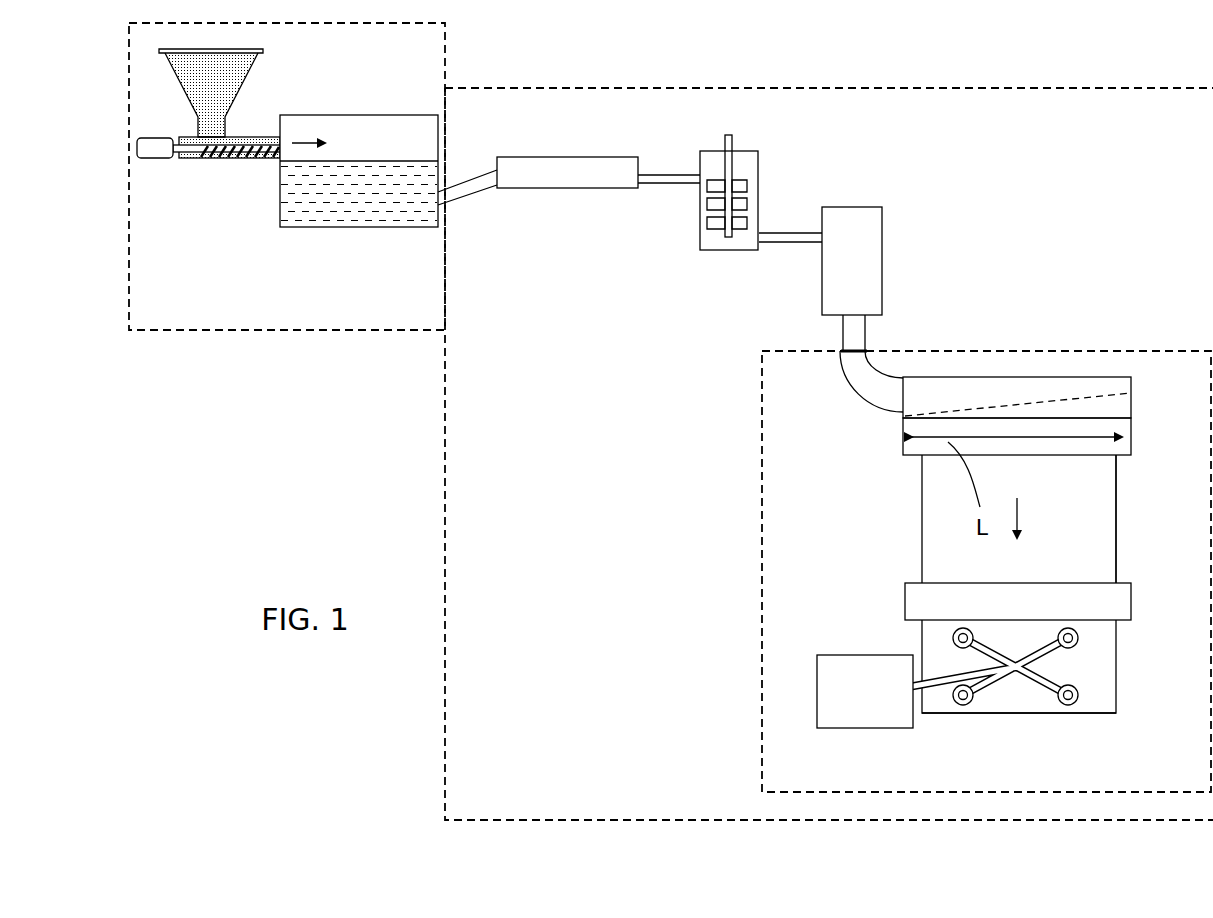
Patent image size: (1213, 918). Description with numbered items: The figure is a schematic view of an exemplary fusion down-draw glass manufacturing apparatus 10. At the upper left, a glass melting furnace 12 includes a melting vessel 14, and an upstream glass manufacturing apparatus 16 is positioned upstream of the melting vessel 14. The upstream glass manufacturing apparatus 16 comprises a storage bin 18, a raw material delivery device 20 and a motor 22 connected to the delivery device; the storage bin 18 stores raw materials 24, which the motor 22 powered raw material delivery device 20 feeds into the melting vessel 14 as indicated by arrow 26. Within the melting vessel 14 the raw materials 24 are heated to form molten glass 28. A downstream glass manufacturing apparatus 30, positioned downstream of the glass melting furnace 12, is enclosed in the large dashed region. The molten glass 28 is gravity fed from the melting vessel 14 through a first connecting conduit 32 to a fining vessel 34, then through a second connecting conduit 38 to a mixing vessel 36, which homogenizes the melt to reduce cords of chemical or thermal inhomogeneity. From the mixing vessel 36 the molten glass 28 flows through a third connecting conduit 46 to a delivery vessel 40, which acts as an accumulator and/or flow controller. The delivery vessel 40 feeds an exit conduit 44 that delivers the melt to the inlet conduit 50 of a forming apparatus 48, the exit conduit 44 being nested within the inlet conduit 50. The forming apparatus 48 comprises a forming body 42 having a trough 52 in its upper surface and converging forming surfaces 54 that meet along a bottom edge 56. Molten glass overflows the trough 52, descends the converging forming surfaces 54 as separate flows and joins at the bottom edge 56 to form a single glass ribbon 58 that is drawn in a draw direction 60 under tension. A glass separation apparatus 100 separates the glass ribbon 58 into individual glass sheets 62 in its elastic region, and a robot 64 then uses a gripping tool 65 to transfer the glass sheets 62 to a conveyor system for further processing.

The glass manufacturing apparatus 10 is at (363, 395).
The glass melting furnace 12 is at (291, 330).
The melting vessel 14 is at (325, 113).
The upstream glass manufacturing apparatus 16 is at (180, 187).
The storage bin 18 is at (253, 72).
The raw material delivery device 20 is at (247, 160).
The motor 22 is at (148, 137).
The raw materials 24 is at (220, 87).
The arrow 26 is at (305, 141).
The molten glass 28 is at (308, 217).
The downstream glass manufacturing apparatus 30 is at (705, 88).
The first connecting conduit 32 is at (455, 202).
The fining vessel 34 is at (552, 188).
The mixing vessel 36 is at (700, 230).
The second connecting conduit 38 is at (668, 183).
The delivery vessel 40 is at (820, 290).
The forming body 42 is at (1132, 413).
The exit conduit 44 is at (865, 332).
The third connecting conduit 46 is at (788, 248).
The forming apparatus 48 is at (1027, 351).
The inlet conduit 50 is at (860, 402).
The trough 52 is at (1070, 400).
The converging forming surfaces 54 is at (902, 448).
The bottom edge 56 is at (1097, 458).
The glass ribbon 58 is at (922, 508).
The draw direction 60 is at (1033, 514).
The glass sheets 62 is at (1117, 663).
The robot 64 is at (838, 650).
The gripping tool 65 is at (1040, 715).
The glass separation apparatus 100 is at (1130, 590).